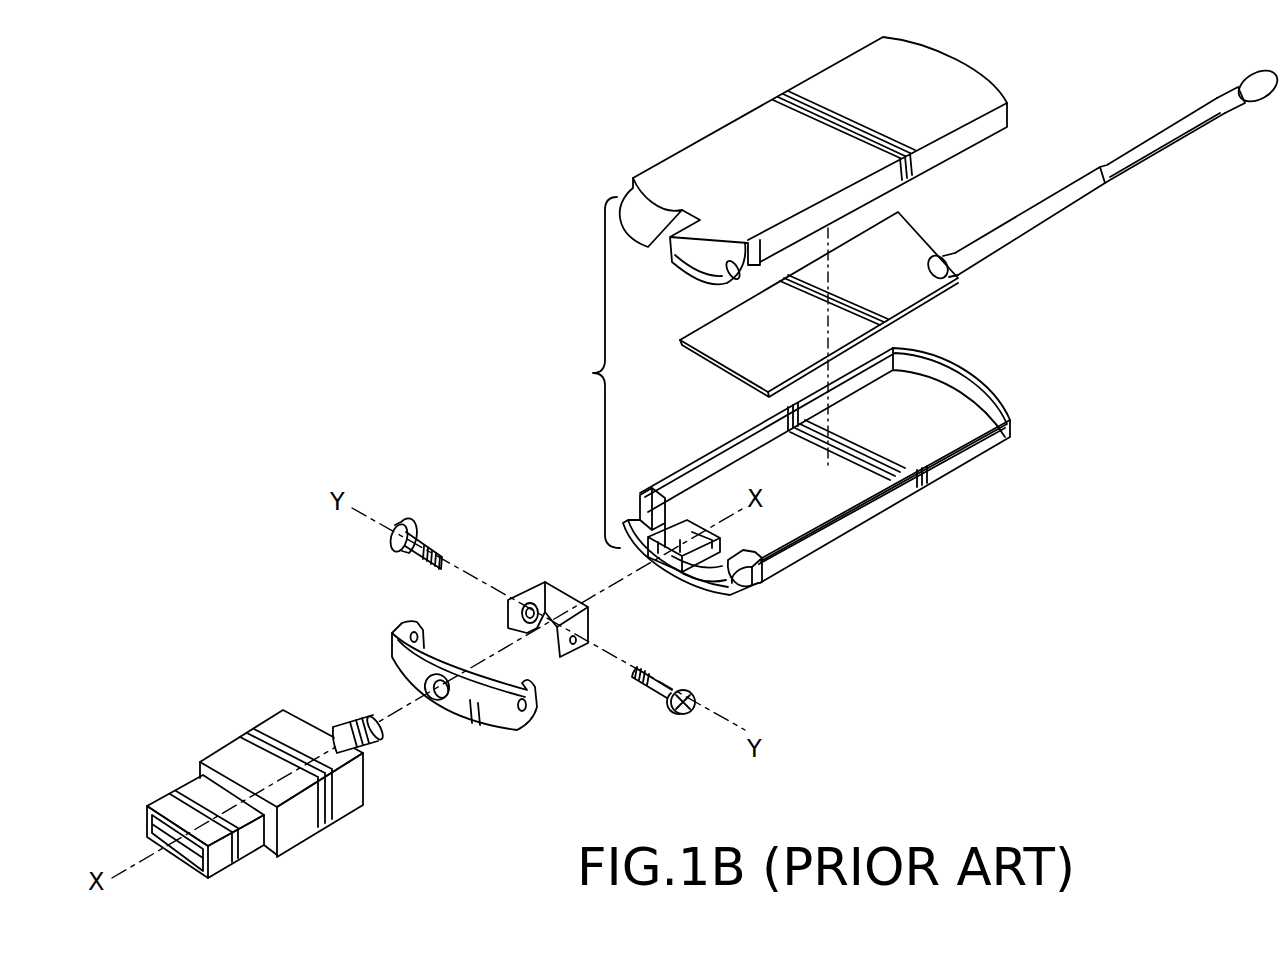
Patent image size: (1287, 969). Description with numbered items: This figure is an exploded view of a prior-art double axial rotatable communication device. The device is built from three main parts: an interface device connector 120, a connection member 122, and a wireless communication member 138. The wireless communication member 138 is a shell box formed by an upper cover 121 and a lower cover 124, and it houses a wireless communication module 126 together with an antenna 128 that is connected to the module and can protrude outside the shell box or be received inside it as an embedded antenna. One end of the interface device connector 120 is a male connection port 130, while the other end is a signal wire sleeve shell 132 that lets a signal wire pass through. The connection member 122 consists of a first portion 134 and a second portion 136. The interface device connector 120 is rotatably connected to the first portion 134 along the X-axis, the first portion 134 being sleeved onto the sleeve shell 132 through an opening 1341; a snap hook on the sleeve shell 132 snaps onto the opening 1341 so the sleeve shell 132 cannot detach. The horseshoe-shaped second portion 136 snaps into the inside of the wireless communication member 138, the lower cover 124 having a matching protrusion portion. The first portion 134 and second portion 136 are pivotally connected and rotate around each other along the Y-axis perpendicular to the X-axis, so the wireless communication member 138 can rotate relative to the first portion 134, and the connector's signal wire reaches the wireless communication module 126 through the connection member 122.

The interface device connector 120 is at (378, 799).
The upper cover 121 is at (735, 142).
The connection member 122 is at (447, 476).
The lower cover 124 is at (785, 510).
The wireless communication module 126 is at (743, 350).
The antenna 128 is at (1137, 165).
The male connection port 130 is at (150, 842).
The signal wire sleeve shell 132 is at (352, 728).
The first portion 134 is at (395, 660).
The opening 1341 is at (442, 706).
The second portion 136 is at (525, 596).
The wireless communication member 138 is at (583, 372).